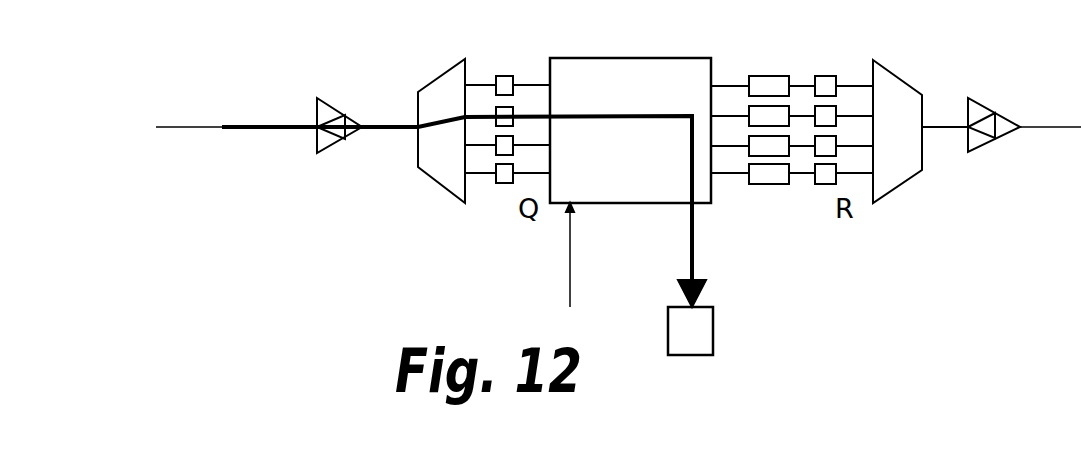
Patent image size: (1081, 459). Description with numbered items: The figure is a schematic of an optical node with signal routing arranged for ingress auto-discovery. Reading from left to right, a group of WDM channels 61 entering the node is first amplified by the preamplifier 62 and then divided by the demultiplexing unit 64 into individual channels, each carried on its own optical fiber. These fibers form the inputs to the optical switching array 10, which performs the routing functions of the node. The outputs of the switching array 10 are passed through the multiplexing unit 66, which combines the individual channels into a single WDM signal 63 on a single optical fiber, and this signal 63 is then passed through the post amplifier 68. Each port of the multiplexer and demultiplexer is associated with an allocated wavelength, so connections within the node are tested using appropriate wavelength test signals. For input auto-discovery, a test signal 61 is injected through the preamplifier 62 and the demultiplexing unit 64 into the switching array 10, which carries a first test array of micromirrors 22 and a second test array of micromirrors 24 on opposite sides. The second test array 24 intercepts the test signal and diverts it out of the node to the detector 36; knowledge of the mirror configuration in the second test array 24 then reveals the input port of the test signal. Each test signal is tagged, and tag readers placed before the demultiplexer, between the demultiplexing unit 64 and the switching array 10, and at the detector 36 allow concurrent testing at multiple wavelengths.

The optical switching array 10 is at (657, 58).
The first test array of micromirrors 22 is at (572, 58).
The second test array of micromirrors 24 is at (705, 203).
The detector 36 is at (713, 338).
The group of WDM channels 61 is at (252, 127).
The preamplifier 62 is at (320, 153).
The signal 63 is at (940, 120).
The demultiplexing unit 64 is at (453, 193).
The multiplexing unit 66 is at (902, 182).
The post amplifier 68 is at (980, 152).